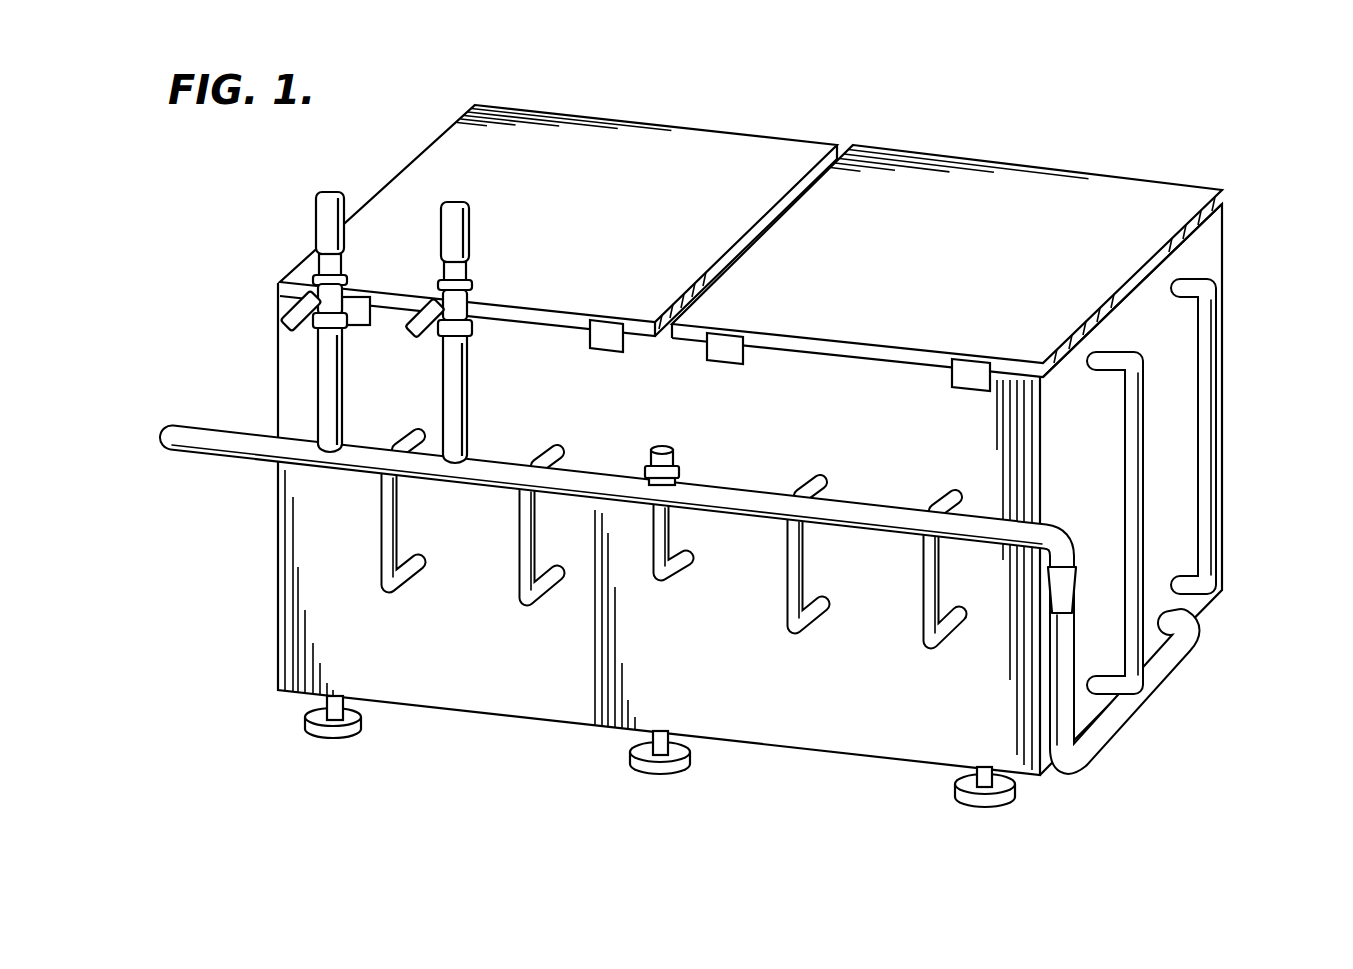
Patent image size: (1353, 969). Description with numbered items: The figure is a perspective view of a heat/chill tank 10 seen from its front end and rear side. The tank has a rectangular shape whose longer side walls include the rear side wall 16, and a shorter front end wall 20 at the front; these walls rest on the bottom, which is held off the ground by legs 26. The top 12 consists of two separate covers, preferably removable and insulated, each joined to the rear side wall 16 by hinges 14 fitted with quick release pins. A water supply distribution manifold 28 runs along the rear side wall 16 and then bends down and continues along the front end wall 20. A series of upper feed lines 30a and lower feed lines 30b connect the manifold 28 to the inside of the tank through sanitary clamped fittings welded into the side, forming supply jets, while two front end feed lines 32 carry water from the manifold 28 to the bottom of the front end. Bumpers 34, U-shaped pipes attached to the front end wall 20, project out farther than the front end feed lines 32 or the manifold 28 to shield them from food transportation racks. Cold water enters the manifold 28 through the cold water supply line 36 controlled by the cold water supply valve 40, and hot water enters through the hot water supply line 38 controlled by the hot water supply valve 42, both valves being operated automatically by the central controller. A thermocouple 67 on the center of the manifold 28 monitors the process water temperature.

The heat/chill tank 10 is at (744, 441).
The top 12 is at (575, 219).
The hinges 14 is at (955, 385).
The rear side wall 16 is at (806, 440).
The front end wall 20 is at (1212, 263).
The legs 26 is at (688, 764).
The water supply distribution manifold 28 is at (728, 512).
The upper feed lines 30a is at (554, 457).
The lower feed lines 30b is at (420, 576).
The front end feed lines 32 is at (1188, 620).
The bumpers 34 is at (1146, 482).
The cold water supply line 36 is at (467, 402).
The hot water supply line 38 is at (322, 378).
The cold water supply valve 40 is at (424, 331).
The hot water supply valve 42 is at (288, 314).
The thermocouple 67 is at (715, 418).